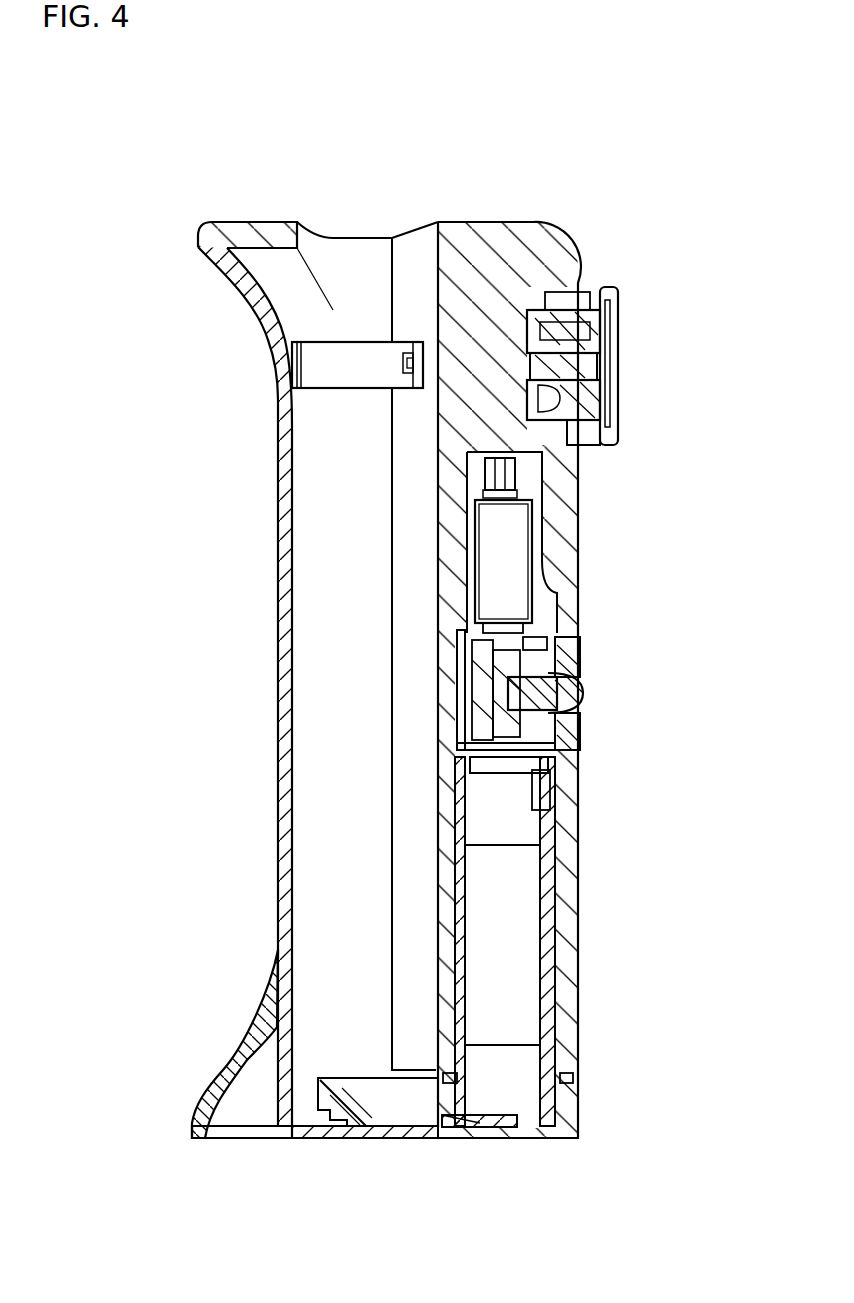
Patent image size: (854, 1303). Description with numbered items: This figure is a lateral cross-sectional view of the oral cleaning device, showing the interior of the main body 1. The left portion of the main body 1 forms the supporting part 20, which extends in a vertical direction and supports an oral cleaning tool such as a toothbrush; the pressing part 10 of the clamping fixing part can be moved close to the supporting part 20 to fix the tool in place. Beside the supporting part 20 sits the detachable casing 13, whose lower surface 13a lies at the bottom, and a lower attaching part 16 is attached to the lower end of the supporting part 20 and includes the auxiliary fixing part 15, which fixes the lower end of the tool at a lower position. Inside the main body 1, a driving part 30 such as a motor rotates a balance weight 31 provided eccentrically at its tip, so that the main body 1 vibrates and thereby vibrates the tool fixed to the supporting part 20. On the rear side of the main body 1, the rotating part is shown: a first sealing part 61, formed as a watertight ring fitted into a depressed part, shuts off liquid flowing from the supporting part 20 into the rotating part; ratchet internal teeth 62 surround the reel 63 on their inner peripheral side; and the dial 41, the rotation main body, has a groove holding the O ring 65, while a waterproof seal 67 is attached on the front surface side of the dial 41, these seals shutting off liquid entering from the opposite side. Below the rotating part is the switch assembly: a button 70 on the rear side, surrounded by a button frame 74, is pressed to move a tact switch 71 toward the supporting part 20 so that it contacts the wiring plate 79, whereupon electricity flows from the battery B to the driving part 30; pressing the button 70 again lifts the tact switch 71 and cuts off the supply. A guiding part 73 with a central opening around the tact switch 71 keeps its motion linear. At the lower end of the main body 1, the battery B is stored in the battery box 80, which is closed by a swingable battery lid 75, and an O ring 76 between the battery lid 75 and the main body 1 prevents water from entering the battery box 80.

The main body 1 is at (576, 900).
The pressing part 10 is at (328, 365).
The casing 13 is at (278, 825).
The lower surface 13a is at (305, 1140).
The auxiliary fixing part 15 is at (327, 1122).
The lower attaching part 16 is at (394, 1140).
The supporting part 20 is at (410, 245).
The driving part 30 is at (503, 553).
The balance weight 31 is at (497, 473).
The dial 41 is at (587, 287).
The first sealing part 61 is at (593, 463).
The ratchet internal teeth 62 is at (547, 330).
The reel 63 is at (620, 405).
The O ring 65 is at (597, 447).
The waterproof seal 67 is at (617, 317).
The button 70 is at (573, 695).
The tact switch 71 is at (580, 680).
The guiding part 73 is at (545, 650).
The button frame 74 is at (567, 743).
The battery lid 75 is at (513, 1133).
The O ring 76 is at (574, 1078).
The wiring plate 79 is at (473, 722).
The battery box 80 is at (545, 1047).
The battery B is at (520, 978).